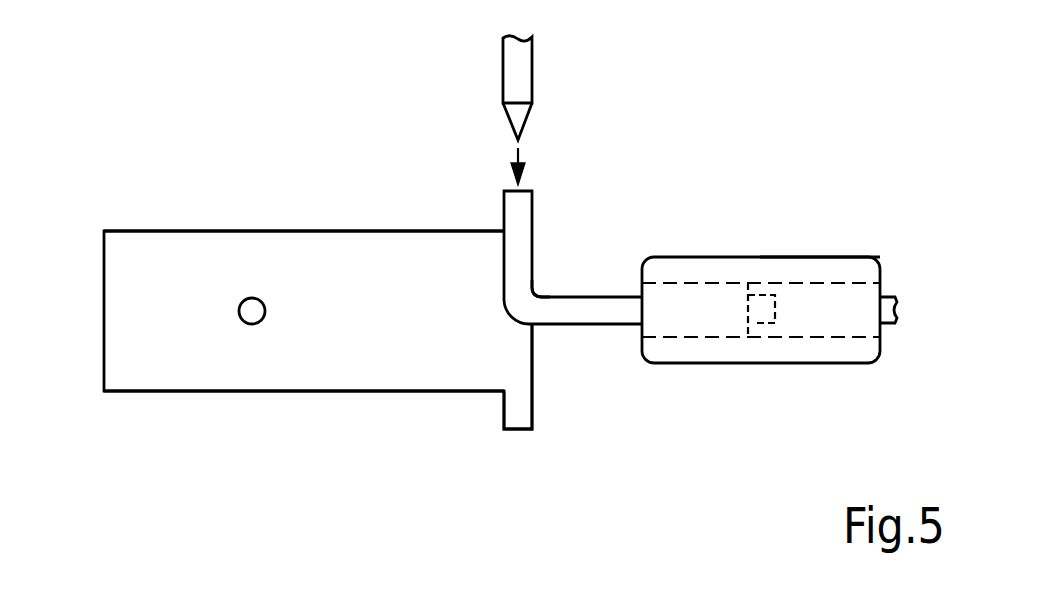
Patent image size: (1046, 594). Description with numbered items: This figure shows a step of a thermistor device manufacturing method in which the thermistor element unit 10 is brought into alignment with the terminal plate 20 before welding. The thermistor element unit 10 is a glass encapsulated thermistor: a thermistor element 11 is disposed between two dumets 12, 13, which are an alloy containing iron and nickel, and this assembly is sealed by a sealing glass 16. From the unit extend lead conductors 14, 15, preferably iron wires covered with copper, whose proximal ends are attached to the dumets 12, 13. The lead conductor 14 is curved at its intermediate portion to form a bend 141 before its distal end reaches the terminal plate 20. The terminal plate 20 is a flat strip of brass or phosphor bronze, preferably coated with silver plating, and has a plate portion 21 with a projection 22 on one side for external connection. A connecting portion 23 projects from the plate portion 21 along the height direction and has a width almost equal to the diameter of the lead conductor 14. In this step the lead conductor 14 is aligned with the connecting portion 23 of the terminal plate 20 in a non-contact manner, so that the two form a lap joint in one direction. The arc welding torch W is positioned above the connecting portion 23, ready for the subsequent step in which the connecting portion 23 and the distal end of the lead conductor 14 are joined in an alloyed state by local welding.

The thermistor element unit 10 is at (828, 322).
The thermistor element 11 is at (760, 270).
The dumet 12 is at (690, 270).
The dumet 13 is at (830, 270).
The lead conductor 14 is at (598, 324).
The bend 141 is at (527, 308).
The lead conductor 15 is at (888, 323).
The sealing glass 16 is at (762, 315).
The terminal plate 20 is at (291, 391).
The plate portion 21 is at (306, 263).
The projection 22 is at (252, 298).
The connecting portion 23 is at (515, 413).
The arc welding torch W is at (532, 78).